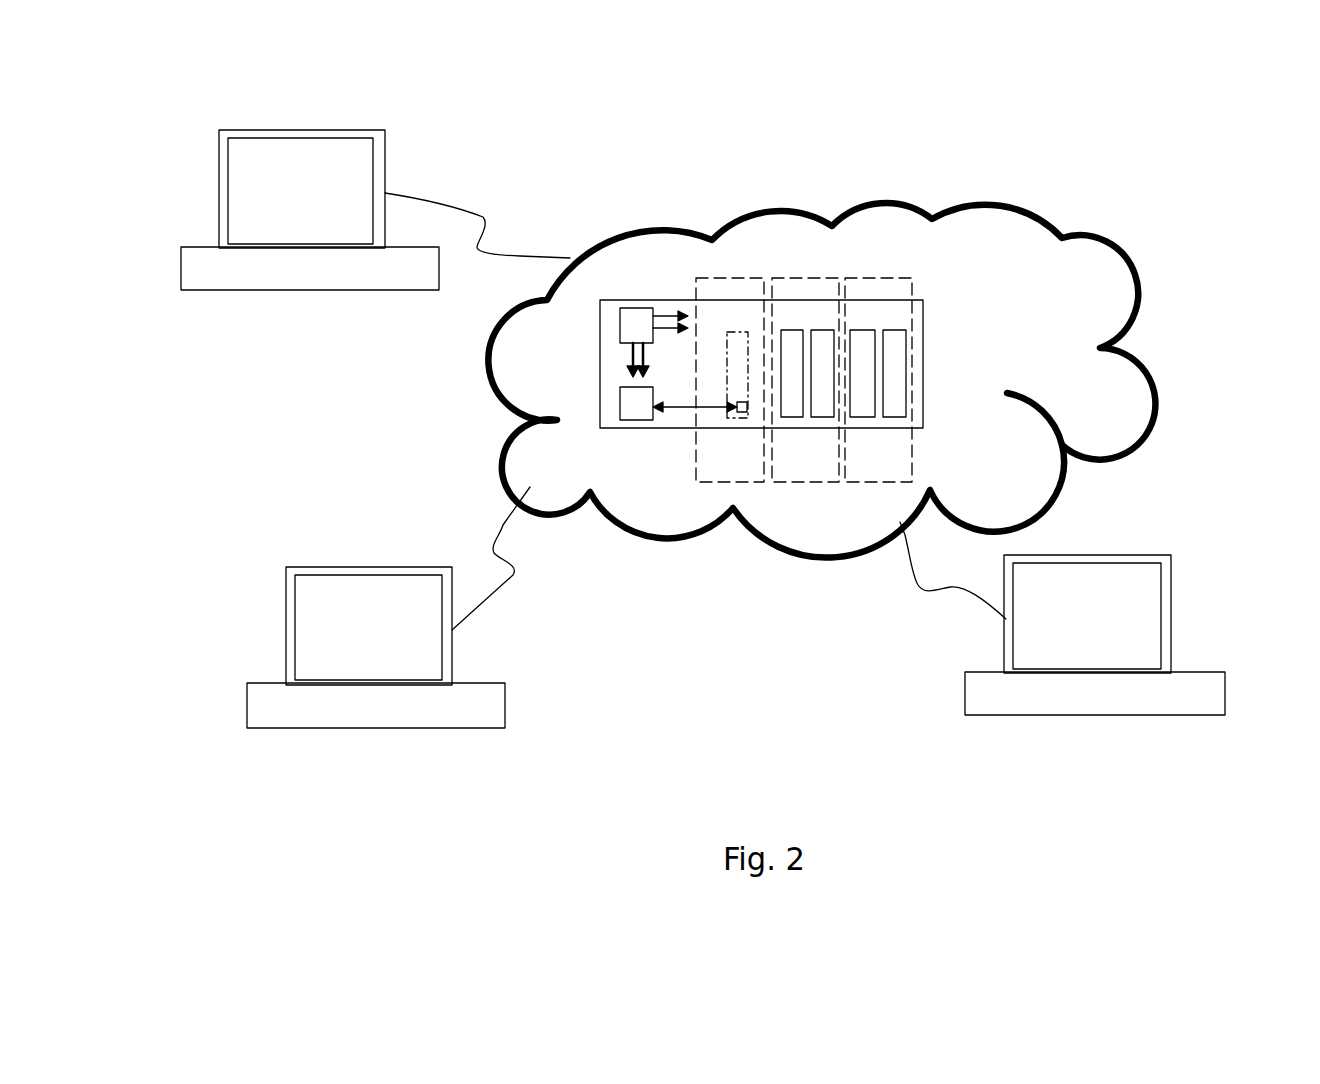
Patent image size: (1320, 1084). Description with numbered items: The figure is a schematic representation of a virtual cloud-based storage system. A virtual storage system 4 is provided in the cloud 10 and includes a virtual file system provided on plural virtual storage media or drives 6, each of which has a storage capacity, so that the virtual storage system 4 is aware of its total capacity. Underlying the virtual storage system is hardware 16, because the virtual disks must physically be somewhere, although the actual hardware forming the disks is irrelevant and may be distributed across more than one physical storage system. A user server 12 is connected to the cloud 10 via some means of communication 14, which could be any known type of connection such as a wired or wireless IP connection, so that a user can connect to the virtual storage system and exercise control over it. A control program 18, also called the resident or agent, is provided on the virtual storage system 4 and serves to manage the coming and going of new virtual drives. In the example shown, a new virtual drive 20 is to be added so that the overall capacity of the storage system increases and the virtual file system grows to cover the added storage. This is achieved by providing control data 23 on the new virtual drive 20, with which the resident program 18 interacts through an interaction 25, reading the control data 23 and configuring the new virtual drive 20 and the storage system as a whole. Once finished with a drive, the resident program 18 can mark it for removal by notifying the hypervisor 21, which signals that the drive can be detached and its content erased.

The virtual storage system 4 is at (1095, 192).
The virtual storage media or drives 6 is at (793, 418).
The cloud 10 is at (755, 545).
The user server 12 is at (213, 290).
The means of communication 14 is at (483, 217).
The hardware 16 is at (876, 278).
The control program 18 is at (428, 365).
The new virtual drive 20 is at (737, 332).
The hypervisor 21 is at (620, 318).
The control data 23 is at (736, 410).
The interaction 25 is at (683, 408).